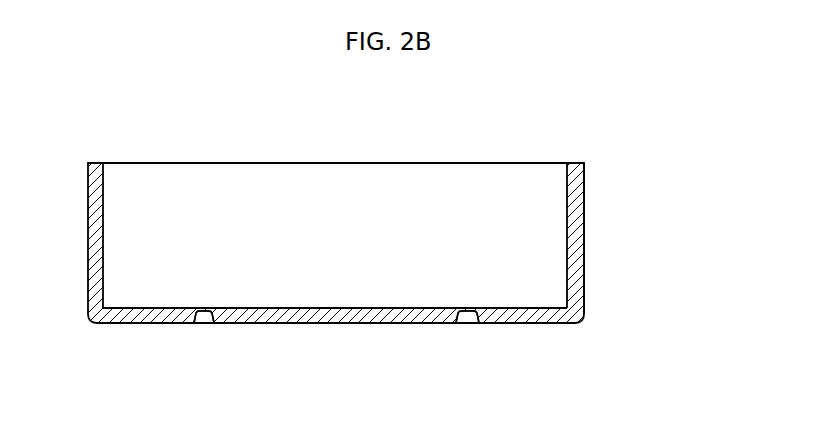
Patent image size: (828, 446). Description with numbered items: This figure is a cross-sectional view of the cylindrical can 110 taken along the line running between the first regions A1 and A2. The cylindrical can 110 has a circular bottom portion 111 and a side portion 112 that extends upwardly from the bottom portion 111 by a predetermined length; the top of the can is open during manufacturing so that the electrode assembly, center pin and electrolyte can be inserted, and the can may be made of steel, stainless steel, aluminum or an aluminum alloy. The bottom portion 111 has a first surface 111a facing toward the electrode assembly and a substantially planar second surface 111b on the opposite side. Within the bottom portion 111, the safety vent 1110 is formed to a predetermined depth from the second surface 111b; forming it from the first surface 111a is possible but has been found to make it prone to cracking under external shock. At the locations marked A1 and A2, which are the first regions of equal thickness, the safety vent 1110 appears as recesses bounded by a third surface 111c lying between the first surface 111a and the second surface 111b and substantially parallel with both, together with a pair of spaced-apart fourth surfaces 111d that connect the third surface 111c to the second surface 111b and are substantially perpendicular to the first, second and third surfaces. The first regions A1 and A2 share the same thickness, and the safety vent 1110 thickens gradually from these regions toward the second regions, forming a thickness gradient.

The cylindrical can 110 is at (609, 140).
The side portion 112 is at (577, 238).
The bottom portion 111 is at (536, 323).
The first surface 111a is at (336, 308).
The second surface 111b is at (336, 323).
The third surface 111c is at (198, 323).
The fourth surfaces 111d is at (206, 323).
The safety vent 1110 is at (464, 335).
The first region A1 is at (203, 300).
The first region A2 is at (467, 300).